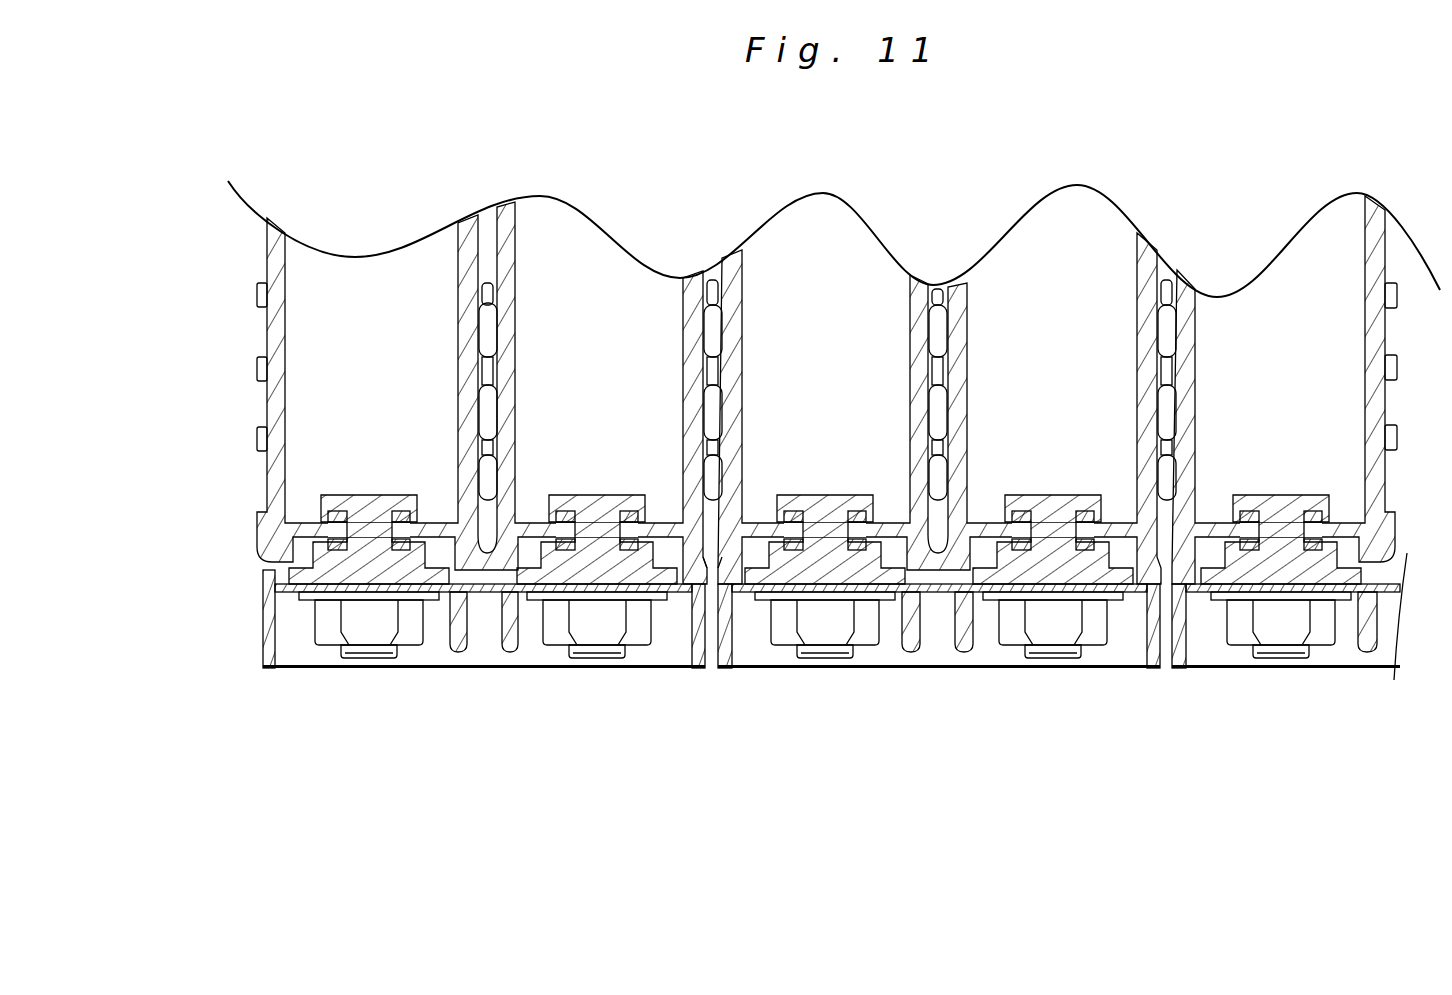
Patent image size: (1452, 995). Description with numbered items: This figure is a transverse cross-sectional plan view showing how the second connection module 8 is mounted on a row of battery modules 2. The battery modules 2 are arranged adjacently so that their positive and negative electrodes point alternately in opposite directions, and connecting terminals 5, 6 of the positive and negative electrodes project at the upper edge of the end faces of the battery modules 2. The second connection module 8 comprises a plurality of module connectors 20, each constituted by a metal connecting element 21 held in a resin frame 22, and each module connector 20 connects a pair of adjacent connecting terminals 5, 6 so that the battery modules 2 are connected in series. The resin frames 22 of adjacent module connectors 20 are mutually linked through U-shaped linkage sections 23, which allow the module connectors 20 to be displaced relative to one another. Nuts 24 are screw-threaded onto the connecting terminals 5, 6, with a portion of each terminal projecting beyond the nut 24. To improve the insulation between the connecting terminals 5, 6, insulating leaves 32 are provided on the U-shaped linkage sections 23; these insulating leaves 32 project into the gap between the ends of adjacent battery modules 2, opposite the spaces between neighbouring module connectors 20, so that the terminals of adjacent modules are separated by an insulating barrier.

The battery module 2 is at (390, 290).
The connecting terminal 5 is at (605, 655).
The connecting terminal 6 is at (375, 650).
The second connection module 8 is at (322, 682).
The module connector 20 is at (410, 672).
The metal connecting element 21 is at (487, 594).
The resin frame 22 is at (262, 657).
The U-shaped linkage section 23 is at (697, 570).
The nut 24 is at (328, 622).
The insulating leaf 32 is at (703, 557).